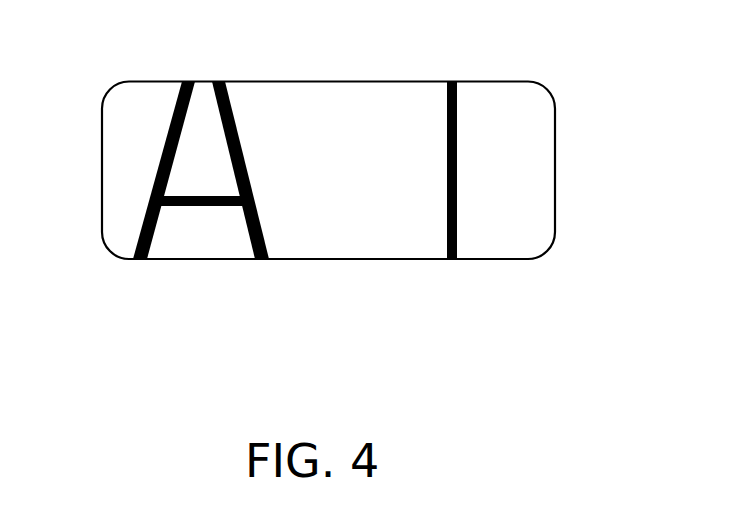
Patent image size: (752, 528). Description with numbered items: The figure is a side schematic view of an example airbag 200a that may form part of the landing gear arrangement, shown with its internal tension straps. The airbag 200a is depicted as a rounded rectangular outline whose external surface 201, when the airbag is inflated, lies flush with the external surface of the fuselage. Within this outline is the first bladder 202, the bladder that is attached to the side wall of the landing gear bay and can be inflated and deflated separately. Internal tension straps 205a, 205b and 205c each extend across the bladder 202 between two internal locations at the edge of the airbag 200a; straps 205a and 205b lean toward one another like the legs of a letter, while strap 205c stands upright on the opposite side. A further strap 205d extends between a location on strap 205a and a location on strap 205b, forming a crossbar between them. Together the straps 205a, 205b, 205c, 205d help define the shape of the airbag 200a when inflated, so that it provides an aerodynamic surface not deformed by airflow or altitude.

The airbag 200a is at (558, 57).
The external surface of the airbag 201 is at (328, 210).
The first bladder 202 is at (337, 115).
The internal tension strap 205a is at (153, 188).
The internal tension strap 205b is at (237, 131).
The internal tension strap 205c is at (521, 218).
The internal tension strap 205d is at (208, 207).